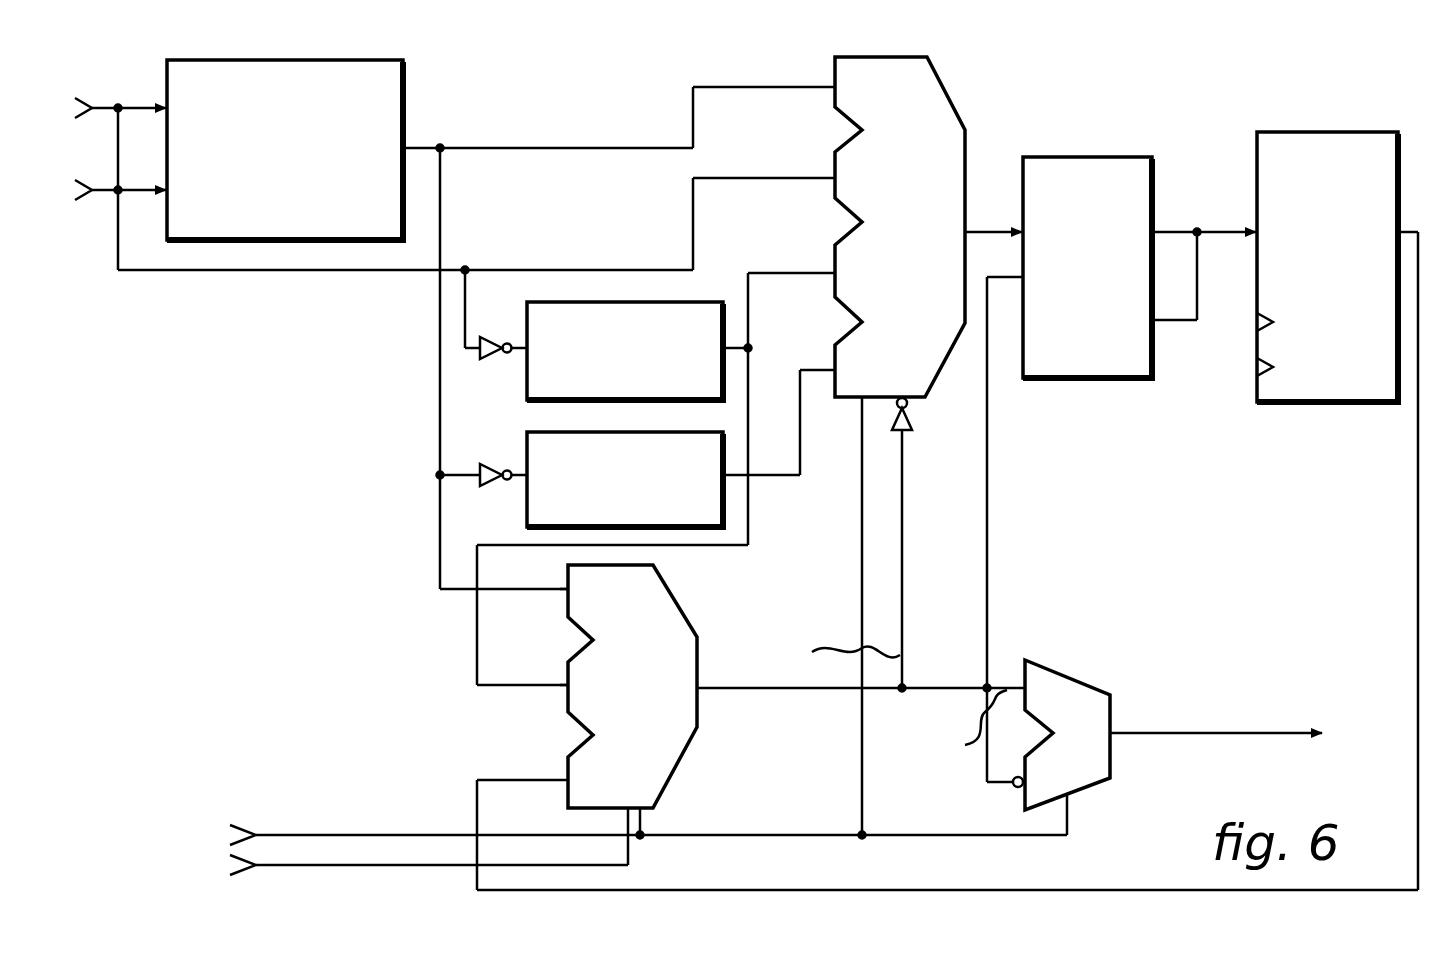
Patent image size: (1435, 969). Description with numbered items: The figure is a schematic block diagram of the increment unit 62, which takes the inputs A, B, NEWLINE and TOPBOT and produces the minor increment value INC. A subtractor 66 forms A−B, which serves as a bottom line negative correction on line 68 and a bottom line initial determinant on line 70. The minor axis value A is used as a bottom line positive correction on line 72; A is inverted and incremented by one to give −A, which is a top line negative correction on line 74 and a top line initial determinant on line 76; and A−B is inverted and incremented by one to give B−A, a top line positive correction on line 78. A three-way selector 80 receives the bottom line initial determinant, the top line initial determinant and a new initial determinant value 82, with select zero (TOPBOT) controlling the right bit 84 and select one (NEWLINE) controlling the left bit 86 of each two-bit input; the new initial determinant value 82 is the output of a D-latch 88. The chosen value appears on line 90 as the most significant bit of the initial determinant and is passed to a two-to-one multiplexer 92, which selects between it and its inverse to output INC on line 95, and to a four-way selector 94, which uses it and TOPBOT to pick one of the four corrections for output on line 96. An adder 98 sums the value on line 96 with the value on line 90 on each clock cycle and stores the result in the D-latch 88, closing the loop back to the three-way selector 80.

The increment unit 62 is at (188, 365).
The subtractor 66 is at (405, 130).
The bottom line negative correction line 68 is at (645, 148).
The bottom line initial determinant line 70 is at (440, 440).
The bottom line positive correction line 72 is at (520, 268).
The top line negative correction line 74 is at (748, 288).
The top line initial determinant line 76 is at (477, 652).
The top line positive correction line 78 is at (800, 400).
The 3-way selector 80 is at (678, 610).
The new initial determinant value 82 is at (437, 762).
The right bit 84 is at (612, 582).
The left bit 86 is at (640, 705).
The D-latch 88 is at (1345, 132).
The selector output line 90 is at (775, 690).
The two-to-one multiplexer 92 is at (1060, 672).
The 4-way selector 94 is at (948, 110).
The INC output line 95 is at (1200, 733).
The 4-way selector output line 96 is at (980, 232).
The adder 98 is at (1080, 157).